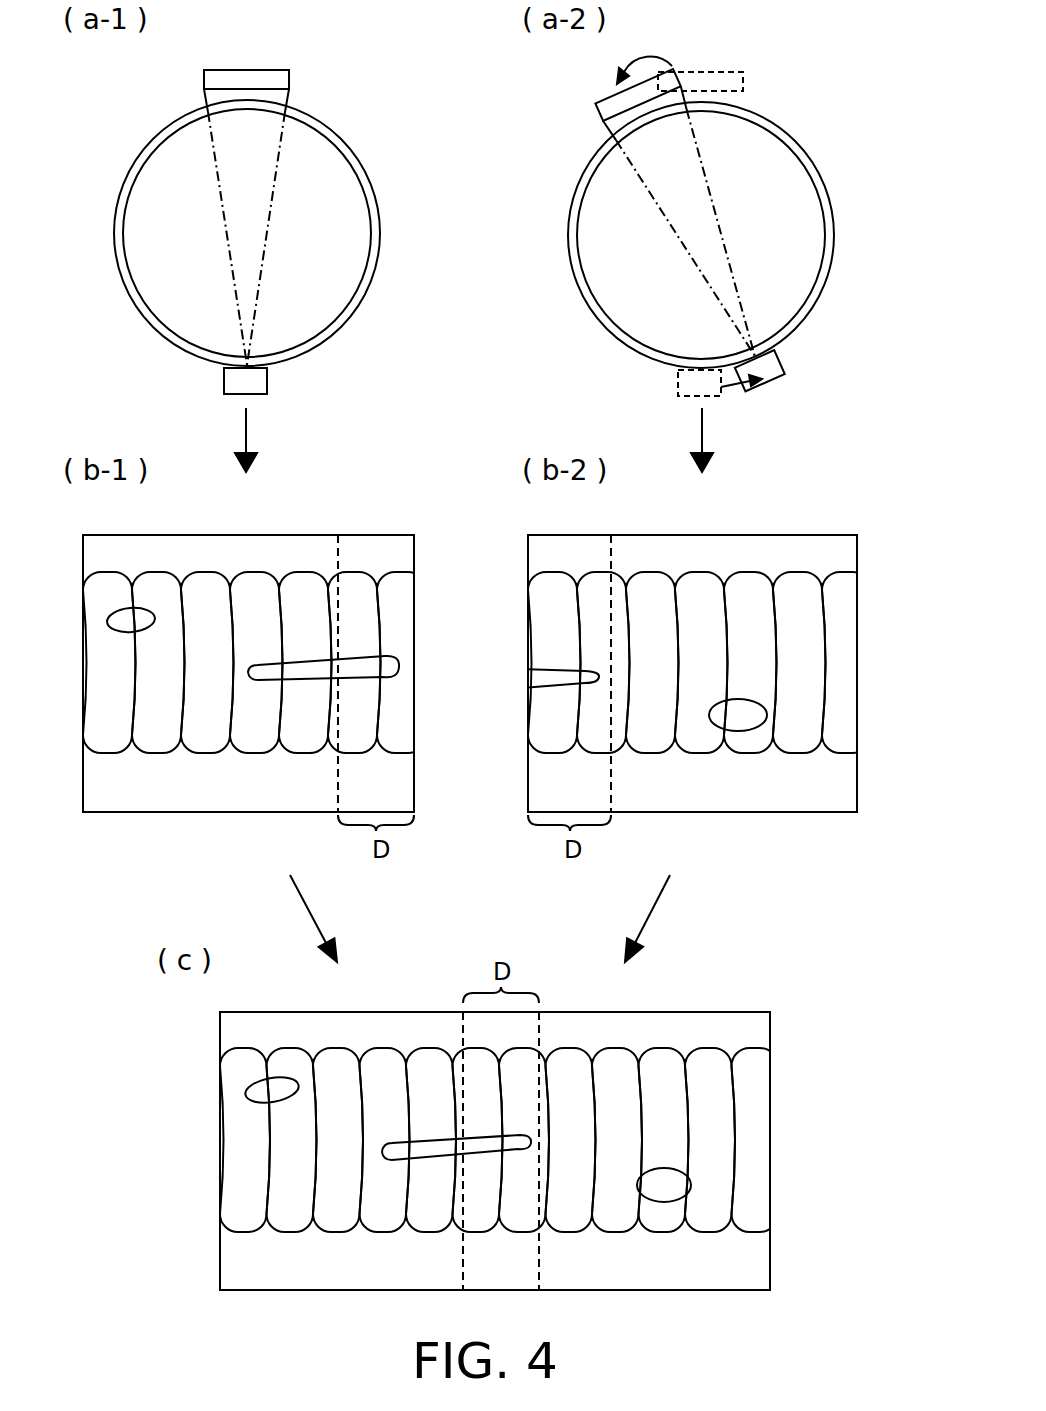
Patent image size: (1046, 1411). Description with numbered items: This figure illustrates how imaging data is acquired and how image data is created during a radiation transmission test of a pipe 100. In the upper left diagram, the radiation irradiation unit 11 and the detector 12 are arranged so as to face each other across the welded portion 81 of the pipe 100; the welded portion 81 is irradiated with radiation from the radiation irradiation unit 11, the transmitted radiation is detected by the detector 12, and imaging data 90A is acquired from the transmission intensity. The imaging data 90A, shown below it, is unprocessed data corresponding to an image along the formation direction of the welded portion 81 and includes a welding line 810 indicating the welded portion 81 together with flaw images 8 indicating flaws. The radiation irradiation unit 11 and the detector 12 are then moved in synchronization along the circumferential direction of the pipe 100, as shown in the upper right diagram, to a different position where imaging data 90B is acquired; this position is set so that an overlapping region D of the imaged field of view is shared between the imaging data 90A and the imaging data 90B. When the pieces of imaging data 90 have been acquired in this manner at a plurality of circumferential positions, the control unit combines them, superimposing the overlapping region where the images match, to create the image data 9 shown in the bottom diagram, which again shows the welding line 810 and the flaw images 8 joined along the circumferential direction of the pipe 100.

The flaw image 8 is at (140, 610).
The image data 9 is at (677, 1290).
The radiation irradiation unit 11 is at (267, 378).
The detector 12 is at (247, 70).
The welded portion 81 is at (329, 128).
The imaging data 90 is at (476, 647).
The imaging data 90A is at (248, 673).
The imaging data 90B is at (692, 673).
The pipe 100 is at (511, 232).
The welding line 810 is at (397, 752).